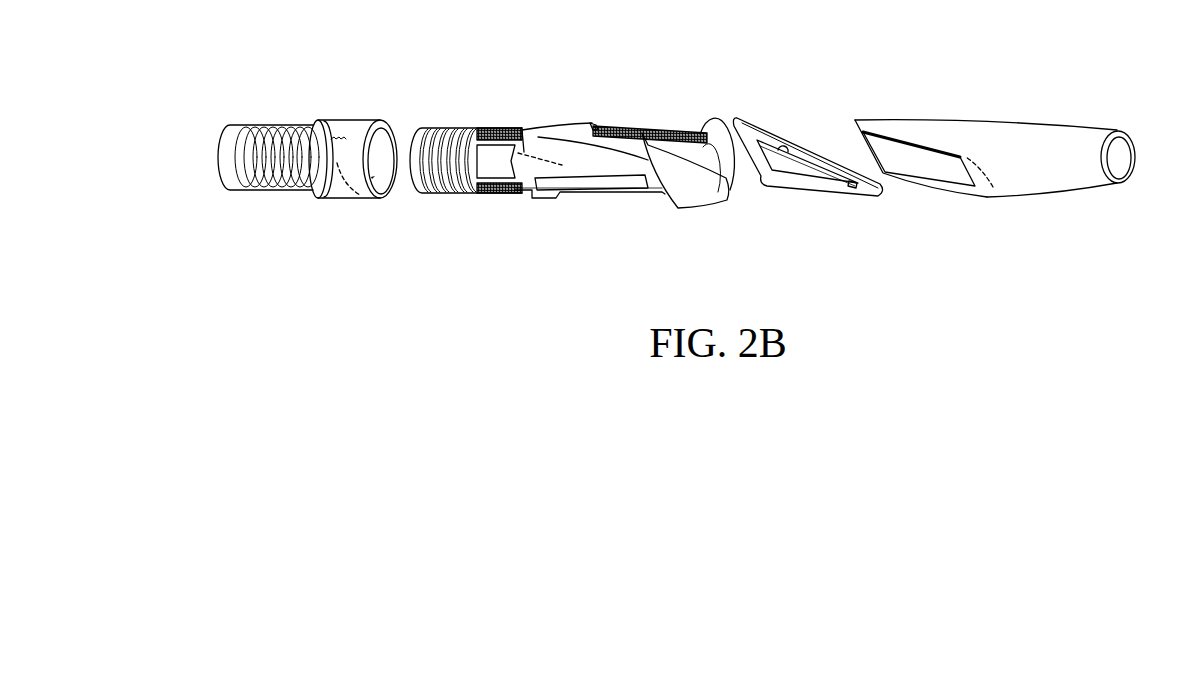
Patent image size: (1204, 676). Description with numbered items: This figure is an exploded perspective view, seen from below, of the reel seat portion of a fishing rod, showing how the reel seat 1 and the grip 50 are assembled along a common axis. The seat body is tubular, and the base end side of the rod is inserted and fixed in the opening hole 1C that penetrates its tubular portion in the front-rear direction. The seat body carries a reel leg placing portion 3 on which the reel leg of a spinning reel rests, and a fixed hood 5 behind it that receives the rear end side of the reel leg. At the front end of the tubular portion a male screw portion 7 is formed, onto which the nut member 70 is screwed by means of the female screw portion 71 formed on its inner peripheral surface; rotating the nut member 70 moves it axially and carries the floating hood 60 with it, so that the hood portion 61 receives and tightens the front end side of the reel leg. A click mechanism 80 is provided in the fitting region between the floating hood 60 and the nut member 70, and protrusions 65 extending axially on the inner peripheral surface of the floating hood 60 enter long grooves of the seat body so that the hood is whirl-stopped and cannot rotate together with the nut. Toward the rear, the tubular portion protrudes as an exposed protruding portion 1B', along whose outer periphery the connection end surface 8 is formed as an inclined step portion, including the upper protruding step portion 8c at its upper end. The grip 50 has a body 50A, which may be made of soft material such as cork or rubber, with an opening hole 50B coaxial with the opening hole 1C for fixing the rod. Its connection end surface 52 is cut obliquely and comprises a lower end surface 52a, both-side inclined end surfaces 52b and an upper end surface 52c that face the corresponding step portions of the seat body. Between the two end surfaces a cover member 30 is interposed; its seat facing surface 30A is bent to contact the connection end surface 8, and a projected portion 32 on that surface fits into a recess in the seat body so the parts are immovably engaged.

The reel seat 1 is at (684, 95).
The exposed protruding portion 1B' is at (712, 115).
The opening hole 1C is at (734, 174).
The reel leg placing portion 3 is at (597, 183).
The fixed hood 5 is at (689, 212).
The male screw portion 7 is at (452, 127).
The connection end surface 8 is at (640, 137).
The upper protruding step portion 8c is at (597, 126).
The cover member 30 is at (807, 183).
The seat facing surface 30A is at (784, 147).
The projected portion 32 is at (853, 190).
The grip 50 is at (1007, 166).
The body 50A is at (1058, 177).
The opening hole 50B is at (1121, 157).
The connection end surface 52 is at (928, 168).
The lower end surface 52a is at (993, 188).
The both-side inclined end surfaces 52b is at (931, 180).
The upper end surface 52c is at (863, 142).
The floating hood 60 is at (358, 166).
The hood portion 61 is at (358, 198).
The protrusions 65 is at (345, 136).
The nut member 70 is at (251, 196).
The female screw portion 71 is at (276, 190).
The click mechanism 80 is at (323, 206).